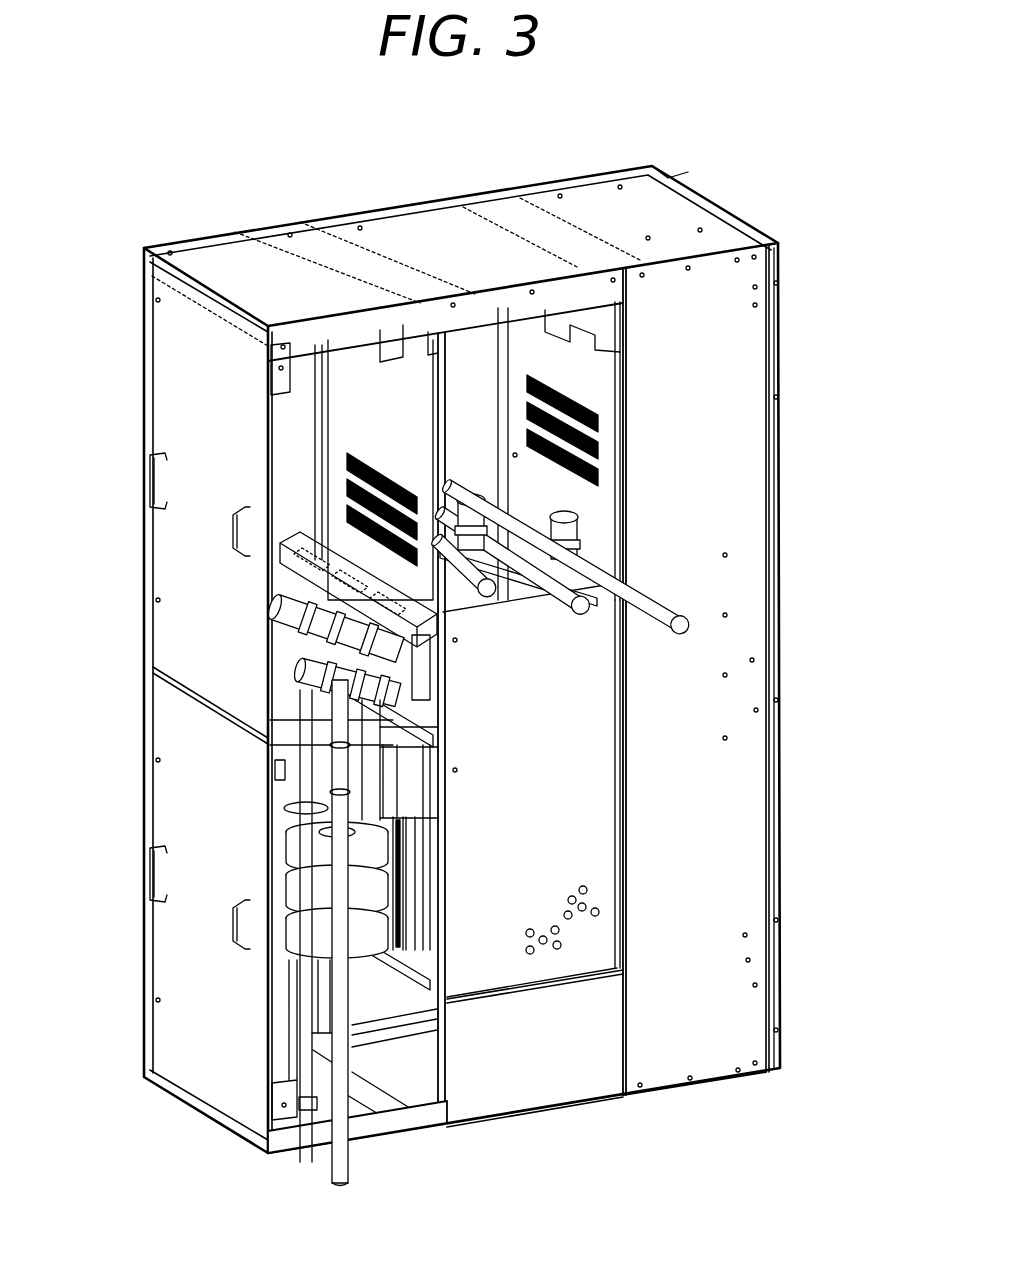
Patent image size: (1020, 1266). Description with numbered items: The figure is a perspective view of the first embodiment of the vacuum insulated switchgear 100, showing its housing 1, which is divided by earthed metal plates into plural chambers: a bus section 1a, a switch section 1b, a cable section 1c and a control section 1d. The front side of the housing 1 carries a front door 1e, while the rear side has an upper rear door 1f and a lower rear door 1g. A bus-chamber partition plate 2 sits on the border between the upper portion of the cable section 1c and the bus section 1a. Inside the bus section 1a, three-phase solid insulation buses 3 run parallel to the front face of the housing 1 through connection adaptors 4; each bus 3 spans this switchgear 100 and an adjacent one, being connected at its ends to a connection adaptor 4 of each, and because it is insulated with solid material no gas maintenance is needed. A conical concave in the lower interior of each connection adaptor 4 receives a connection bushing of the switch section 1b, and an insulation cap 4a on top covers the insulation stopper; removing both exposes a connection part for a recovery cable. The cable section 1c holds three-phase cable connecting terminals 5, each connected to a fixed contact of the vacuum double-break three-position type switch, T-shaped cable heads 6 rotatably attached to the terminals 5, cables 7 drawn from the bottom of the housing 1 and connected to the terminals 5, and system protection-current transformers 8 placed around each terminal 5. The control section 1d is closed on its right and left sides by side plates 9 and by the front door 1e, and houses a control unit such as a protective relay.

The housing 1 is at (706, 192).
The vacuum insulated switchgear 100 is at (575, 168).
The bus section 1a is at (477, 347).
The switch section 1b is at (580, 848).
The cable section 1c is at (280, 437).
The control section 1d is at (750, 420).
The front door 1e is at (785, 307).
The upper rear door 1f is at (170, 383).
The lower rear door 1g is at (170, 945).
The bus-chamber partition plate 2 is at (343, 377).
The solid insulation bus 3 is at (680, 623).
The connection adaptor 4 is at (582, 537).
The insulation cap 4a is at (577, 514).
The cable connecting terminal 5 is at (300, 615).
The T-shaped cable head 6 is at (295, 690).
The cable 7 is at (340, 1005).
The system protection-current transformer 8 is at (423, 675).
The side plate 9 is at (740, 978).